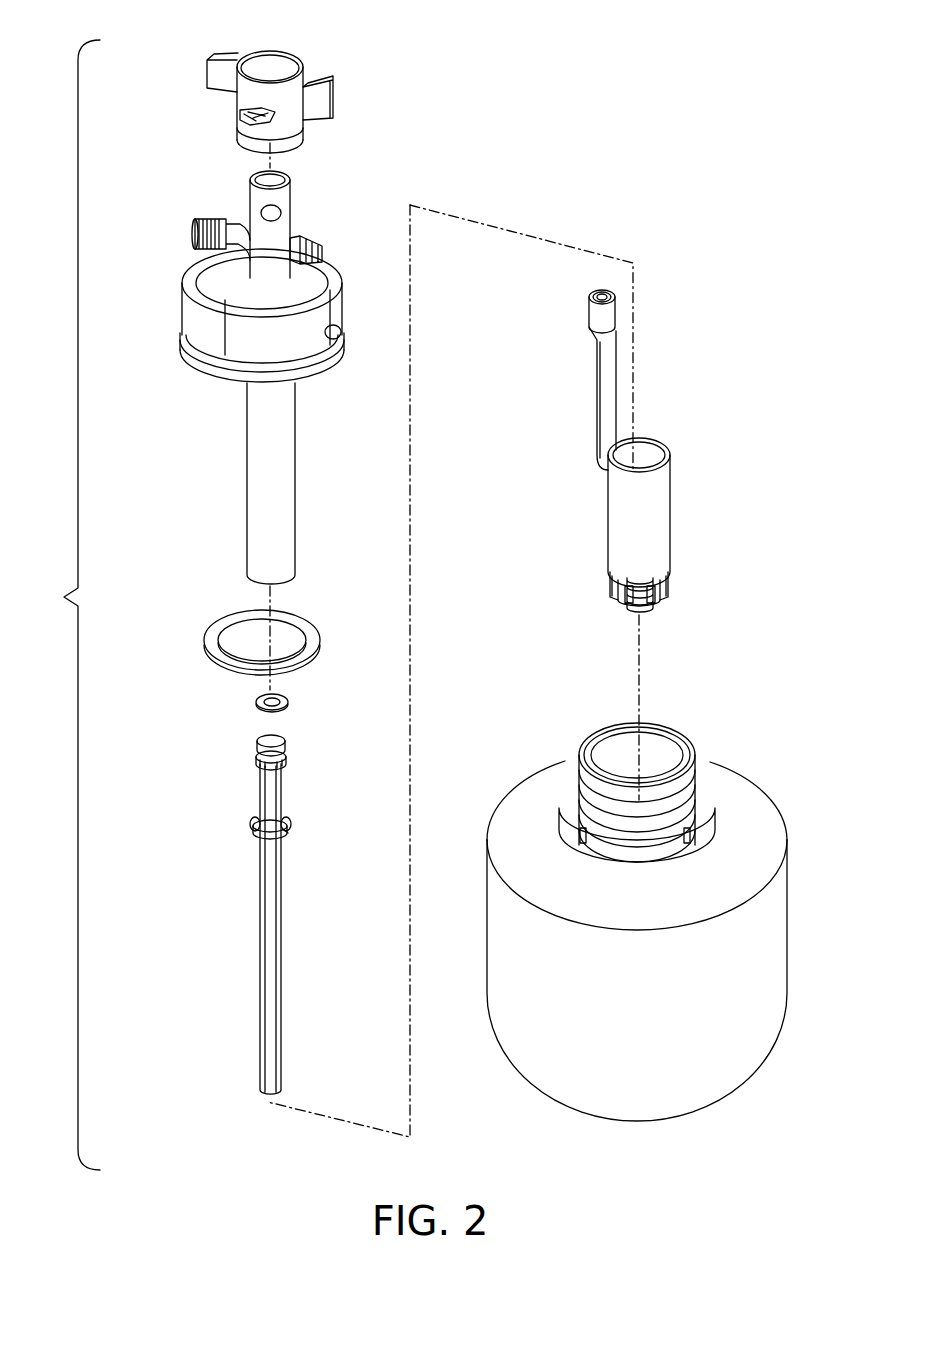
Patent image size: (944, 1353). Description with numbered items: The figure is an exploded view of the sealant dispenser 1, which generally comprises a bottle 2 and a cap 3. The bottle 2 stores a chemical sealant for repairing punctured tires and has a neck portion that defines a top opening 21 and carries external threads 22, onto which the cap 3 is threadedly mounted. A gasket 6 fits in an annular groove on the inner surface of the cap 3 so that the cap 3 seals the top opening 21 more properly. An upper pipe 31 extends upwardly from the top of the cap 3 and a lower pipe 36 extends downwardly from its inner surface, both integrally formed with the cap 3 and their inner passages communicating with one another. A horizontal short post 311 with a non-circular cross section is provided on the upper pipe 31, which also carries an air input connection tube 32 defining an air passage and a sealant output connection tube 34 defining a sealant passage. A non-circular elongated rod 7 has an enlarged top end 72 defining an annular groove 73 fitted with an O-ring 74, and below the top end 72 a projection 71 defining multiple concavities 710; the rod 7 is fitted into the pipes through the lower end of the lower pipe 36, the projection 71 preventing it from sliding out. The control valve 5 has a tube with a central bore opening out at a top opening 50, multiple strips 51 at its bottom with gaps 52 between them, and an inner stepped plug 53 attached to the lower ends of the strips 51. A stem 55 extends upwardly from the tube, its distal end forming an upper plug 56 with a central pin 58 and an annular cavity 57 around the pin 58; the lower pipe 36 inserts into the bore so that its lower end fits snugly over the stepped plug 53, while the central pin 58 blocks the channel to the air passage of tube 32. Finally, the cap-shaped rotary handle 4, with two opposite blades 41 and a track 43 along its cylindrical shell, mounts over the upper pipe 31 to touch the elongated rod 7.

The sealant dispenser 1 is at (68, 605).
The bottle 2 is at (665, 909).
The top opening 21 is at (670, 758).
The external threads 22 is at (702, 787).
The cap 3 is at (244, 264).
The upper pipe 31 is at (247, 212).
The horizontal short post 311 is at (262, 214).
The air input connection tube 32 is at (193, 232).
The sealant output connection tube 34 is at (292, 246).
The lower pipe 36 is at (267, 462).
The rotary handle 4 is at (247, 92).
The blades 41 is at (210, 68).
The track 43 is at (240, 110).
The control valve 5 is at (651, 514).
The top opening 50 is at (652, 447).
The strips 51 is at (672, 593).
The gaps 52 is at (663, 577).
The inner stepped plug 53 is at (617, 602).
The stem 55 is at (607, 339).
The upper plug 56 is at (607, 285).
The annular cavity 57 is at (602, 292).
The central pin 58 is at (609, 300).
The gasket 6 is at (210, 643).
The elongated rod 7 is at (244, 914).
The projection 71 is at (252, 825).
The concavities 710 is at (273, 833).
The enlarged top end 72 is at (257, 742).
The annular groove 73 is at (257, 758).
The O-ring 74 is at (257, 702).